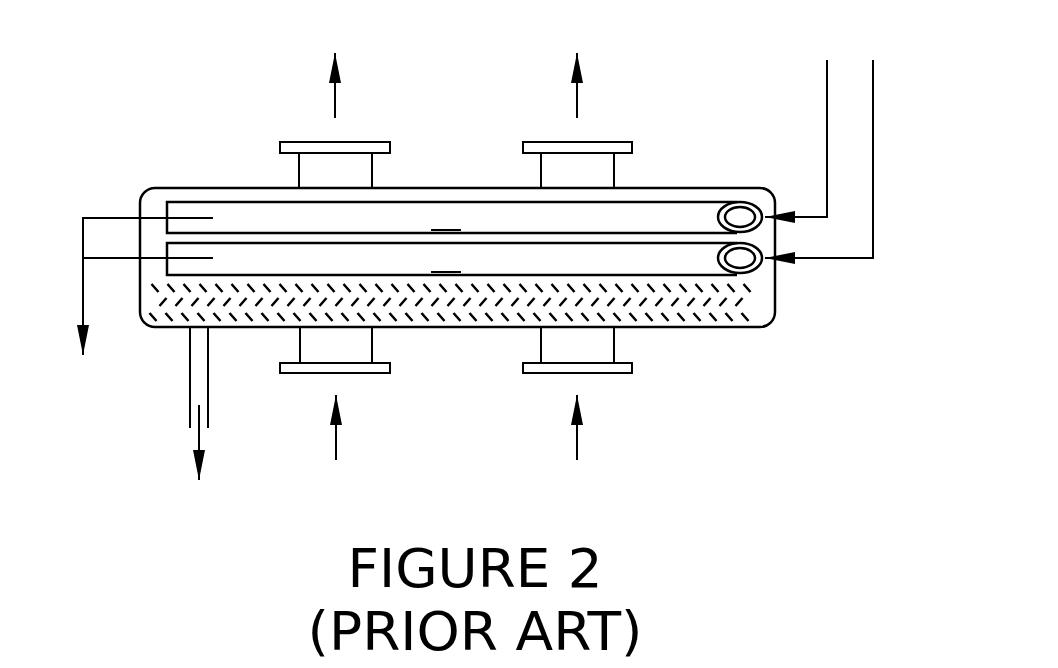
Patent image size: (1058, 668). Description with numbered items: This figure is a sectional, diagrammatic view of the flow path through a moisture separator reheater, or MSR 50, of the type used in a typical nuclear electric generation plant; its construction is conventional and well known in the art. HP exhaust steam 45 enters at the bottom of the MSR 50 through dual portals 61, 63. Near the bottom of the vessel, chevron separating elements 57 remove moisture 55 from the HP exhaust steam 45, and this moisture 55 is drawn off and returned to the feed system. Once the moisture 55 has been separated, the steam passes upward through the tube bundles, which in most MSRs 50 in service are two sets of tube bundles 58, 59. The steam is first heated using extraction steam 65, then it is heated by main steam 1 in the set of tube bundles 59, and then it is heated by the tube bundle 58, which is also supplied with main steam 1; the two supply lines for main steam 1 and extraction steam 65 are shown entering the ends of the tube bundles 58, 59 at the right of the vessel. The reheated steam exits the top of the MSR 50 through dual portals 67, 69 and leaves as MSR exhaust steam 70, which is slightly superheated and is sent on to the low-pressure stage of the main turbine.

The moisture separator reheater (MSR) 50 is at (195, 150).
The main steam 1 is at (825, 80).
The extraction steam 65 is at (875, 80).
The tube bundle 58 is at (745, 195).
The set of tube bundles 59 is at (763, 276).
The chevron separating elements 57 is at (755, 308).
The moisture 55 is at (85, 305).
The portal 67 is at (375, 142).
The portal 69 is at (617, 142).
The portal 61 is at (378, 373).
The portal 63 is at (620, 373).
The MSR exhaust steam 70 is at (357, 70).
The HP exhaust steam 45 is at (560, 445).